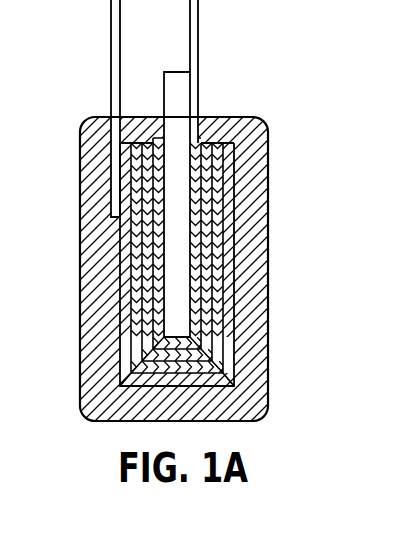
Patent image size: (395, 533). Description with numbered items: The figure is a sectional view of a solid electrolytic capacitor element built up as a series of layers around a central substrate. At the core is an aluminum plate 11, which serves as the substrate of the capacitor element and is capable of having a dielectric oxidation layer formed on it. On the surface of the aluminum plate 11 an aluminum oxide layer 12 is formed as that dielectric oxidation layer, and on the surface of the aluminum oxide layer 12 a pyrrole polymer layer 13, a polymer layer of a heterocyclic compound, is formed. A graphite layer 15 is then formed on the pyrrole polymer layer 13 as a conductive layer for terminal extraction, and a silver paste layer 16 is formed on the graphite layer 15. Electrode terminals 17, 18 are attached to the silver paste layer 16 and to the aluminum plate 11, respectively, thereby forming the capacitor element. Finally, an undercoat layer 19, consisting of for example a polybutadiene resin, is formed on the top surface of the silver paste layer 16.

The aluminum plate 11 is at (173, 78).
The aluminum oxide layer 12 is at (206, 116).
The pyrrole polymer layer 13 is at (203, 169).
The graphite layer 15 is at (215, 217).
The silver paste layer 16 is at (223, 273).
The electrode terminal 17 is at (111, 30).
The electrode terminal 18 is at (198, 30).
The undercoat layer 19 is at (257, 337).